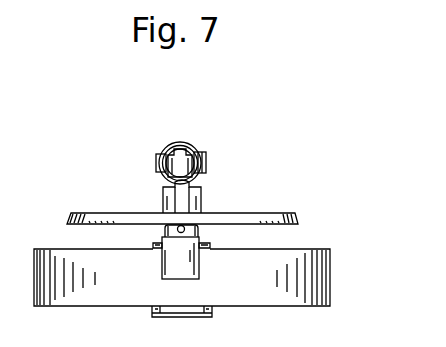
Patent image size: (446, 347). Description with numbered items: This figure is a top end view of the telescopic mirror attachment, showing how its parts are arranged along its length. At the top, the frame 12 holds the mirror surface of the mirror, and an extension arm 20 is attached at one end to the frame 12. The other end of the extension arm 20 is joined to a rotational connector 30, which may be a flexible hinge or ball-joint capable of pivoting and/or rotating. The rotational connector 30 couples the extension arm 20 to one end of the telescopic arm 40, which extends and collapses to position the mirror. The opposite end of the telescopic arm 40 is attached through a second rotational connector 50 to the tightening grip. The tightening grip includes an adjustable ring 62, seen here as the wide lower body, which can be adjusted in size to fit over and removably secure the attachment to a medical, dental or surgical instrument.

The frame 12 is at (298, 218).
The extension arm 20 is at (163, 195).
The rotational connector 30 is at (207, 164).
The telescopic arm 40 is at (184, 143).
The second rotational connector 50 is at (222, 245).
The adjustable ring 62 is at (331, 278).